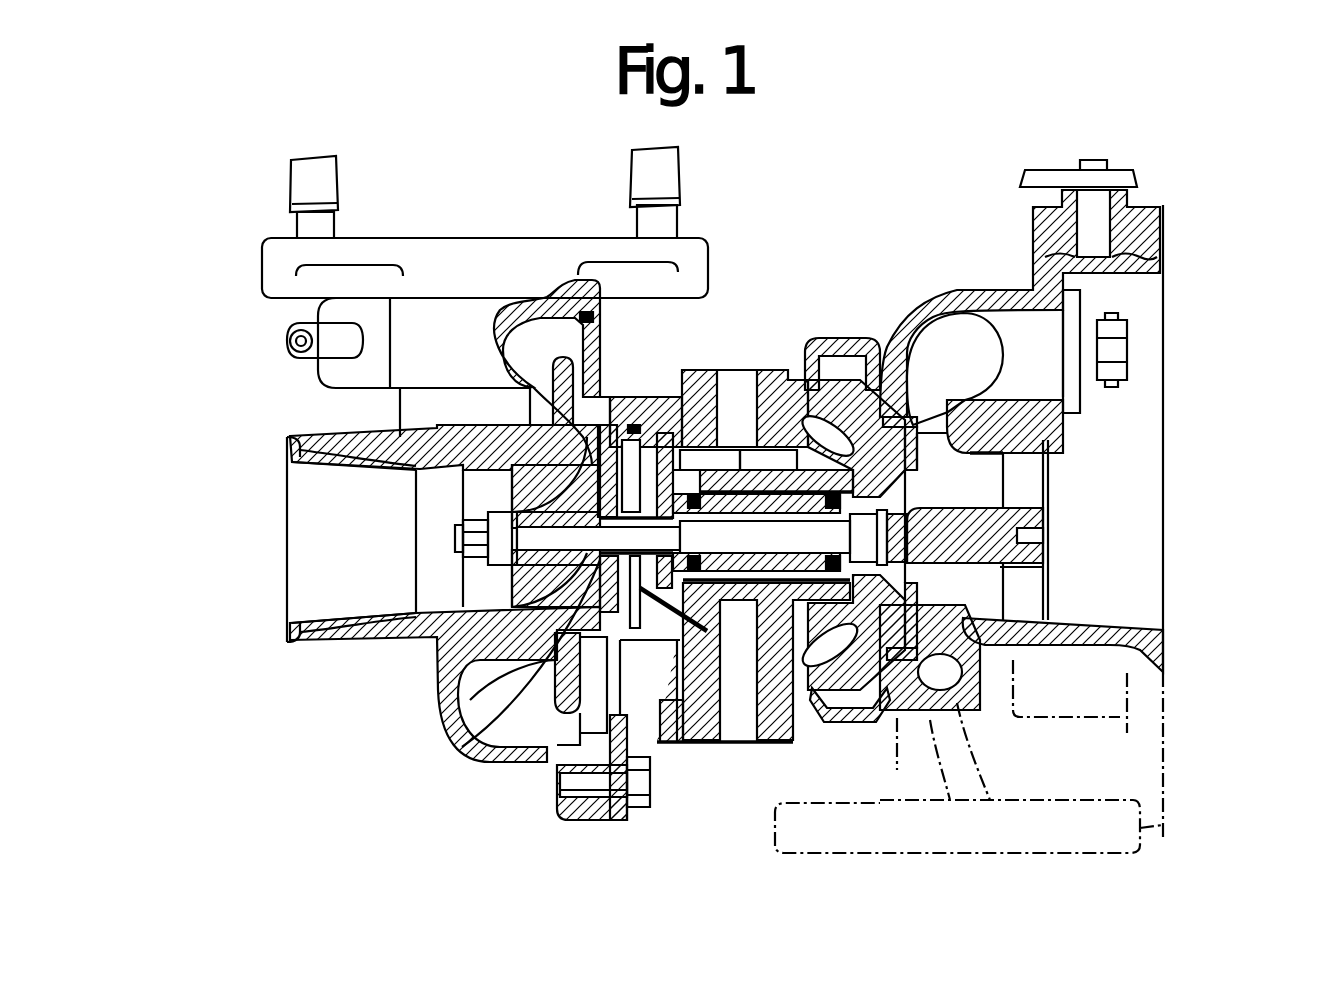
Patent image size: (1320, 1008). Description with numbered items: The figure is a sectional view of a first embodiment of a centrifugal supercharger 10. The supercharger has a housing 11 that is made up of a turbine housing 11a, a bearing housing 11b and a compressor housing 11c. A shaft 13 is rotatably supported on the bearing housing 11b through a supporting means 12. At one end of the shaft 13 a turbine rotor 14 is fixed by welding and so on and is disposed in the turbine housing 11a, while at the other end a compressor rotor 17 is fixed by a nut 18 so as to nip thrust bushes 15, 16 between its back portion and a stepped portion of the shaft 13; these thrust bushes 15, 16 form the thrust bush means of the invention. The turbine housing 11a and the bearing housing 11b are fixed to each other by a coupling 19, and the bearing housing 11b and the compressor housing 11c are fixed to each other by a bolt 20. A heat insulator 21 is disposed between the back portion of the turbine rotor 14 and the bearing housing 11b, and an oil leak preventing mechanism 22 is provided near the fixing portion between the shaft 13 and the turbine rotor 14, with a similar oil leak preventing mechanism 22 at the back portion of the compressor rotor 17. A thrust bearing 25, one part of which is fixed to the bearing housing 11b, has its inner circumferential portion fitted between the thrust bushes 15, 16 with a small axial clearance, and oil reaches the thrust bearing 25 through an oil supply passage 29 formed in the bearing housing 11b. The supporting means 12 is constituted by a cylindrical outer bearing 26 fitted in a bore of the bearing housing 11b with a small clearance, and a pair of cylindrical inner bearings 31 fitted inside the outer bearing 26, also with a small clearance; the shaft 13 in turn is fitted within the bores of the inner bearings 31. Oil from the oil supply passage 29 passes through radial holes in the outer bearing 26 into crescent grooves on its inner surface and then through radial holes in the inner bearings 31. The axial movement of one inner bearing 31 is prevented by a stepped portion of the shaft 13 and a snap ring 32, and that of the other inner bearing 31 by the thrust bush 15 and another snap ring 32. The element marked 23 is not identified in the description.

The centrifugal supercharger 10 is at (272, 418).
The housing 11 is at (508, 772).
The turbine housing 11a is at (1143, 651).
The bearing housing 11b is at (597, 340).
The compressor housing 11c is at (313, 632).
The supporting means 12 is at (880, 578).
The shaft 13 is at (740, 602).
The turbine rotor 14 is at (1013, 522).
The thrust bush 15 is at (676, 742).
The thrust bush 16 is at (556, 658).
The compressor rotor 17 is at (628, 556).
The nut 18 is at (455, 540).
The coupling 19 is at (834, 722).
The bolt 20 is at (638, 805).
The heat insulator 21 is at (940, 415).
The oil leak preventing mechanism 22 is at (860, 377).
The slinger 23 is at (613, 655).
The thrust bearing 25 is at (628, 445).
The outer bearing 26 is at (778, 470).
The oil supply passage 29 is at (688, 453).
The inner bearing 31 is at (733, 463).
The snap ring 32 is at (757, 548).